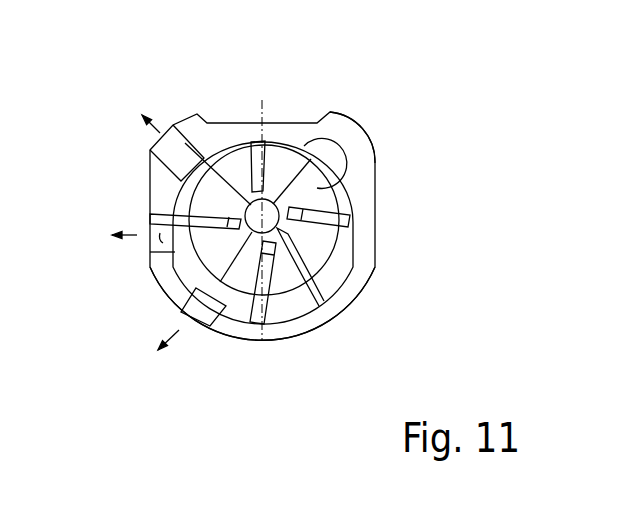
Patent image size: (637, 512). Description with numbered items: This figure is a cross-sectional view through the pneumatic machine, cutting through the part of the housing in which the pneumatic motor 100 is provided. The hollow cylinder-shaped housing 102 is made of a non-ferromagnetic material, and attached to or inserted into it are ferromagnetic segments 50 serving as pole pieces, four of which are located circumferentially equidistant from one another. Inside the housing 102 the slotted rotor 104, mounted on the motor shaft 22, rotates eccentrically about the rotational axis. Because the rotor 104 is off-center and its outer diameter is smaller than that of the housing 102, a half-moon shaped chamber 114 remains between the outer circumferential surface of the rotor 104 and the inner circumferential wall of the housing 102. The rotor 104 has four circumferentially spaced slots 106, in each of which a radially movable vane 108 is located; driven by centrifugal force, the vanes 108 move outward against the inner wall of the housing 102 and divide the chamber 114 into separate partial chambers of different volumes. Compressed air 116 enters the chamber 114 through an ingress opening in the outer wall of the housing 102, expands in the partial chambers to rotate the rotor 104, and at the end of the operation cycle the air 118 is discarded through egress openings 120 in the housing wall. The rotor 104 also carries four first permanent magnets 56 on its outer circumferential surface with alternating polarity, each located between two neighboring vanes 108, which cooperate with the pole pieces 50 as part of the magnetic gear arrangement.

The motor shaft 22 is at (251, 200).
The ferromagnetic segments 50 is at (308, 135).
The first permanent magnets 56 is at (318, 243).
The pneumatic motor 100 is at (381, 70).
The hollow cylinder-shaped housing 102 is at (365, 300).
The rotor 104 is at (315, 197).
The slots 106 is at (322, 310).
The vanes 108 is at (270, 186).
The chamber 114 is at (246, 272).
The compressed air 116 is at (364, 126).
The air 118 is at (148, 128).
The egress openings 120 is at (178, 120).